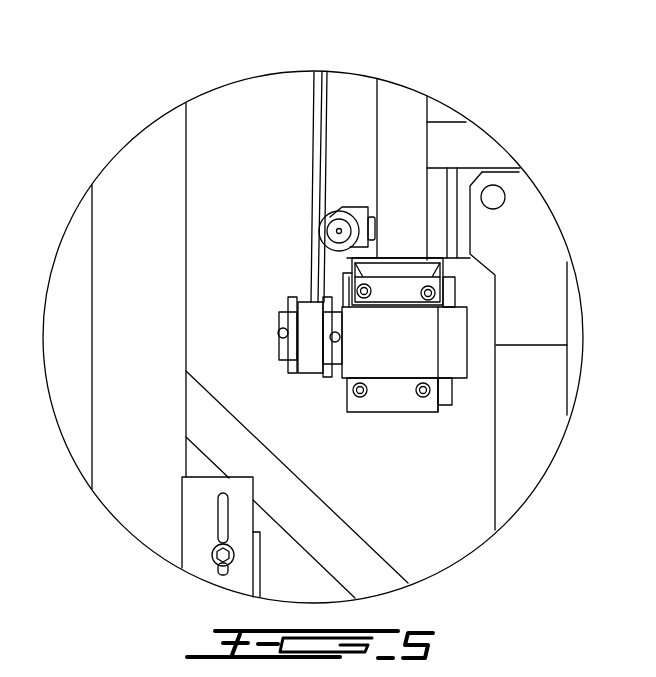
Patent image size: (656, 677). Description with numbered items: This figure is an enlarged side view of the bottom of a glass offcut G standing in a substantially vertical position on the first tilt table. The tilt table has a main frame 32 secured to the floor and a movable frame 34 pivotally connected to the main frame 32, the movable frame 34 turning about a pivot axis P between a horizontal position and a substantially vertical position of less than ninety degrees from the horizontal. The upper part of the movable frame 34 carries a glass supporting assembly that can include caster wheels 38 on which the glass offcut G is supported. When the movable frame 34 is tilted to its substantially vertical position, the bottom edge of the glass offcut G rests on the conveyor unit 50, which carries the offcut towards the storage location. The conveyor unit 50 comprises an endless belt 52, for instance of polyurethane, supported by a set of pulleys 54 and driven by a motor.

The main frame 32 is at (143, 207).
The movable frame 34 is at (400, 113).
The glass offcut G is at (315, 105).
The caster wheels 38 is at (350, 226).
The pivot axis P is at (493, 197).
The conveyor unit 50 is at (308, 378).
The endless belt 52 is at (310, 344).
The pulleys 54 is at (290, 300).